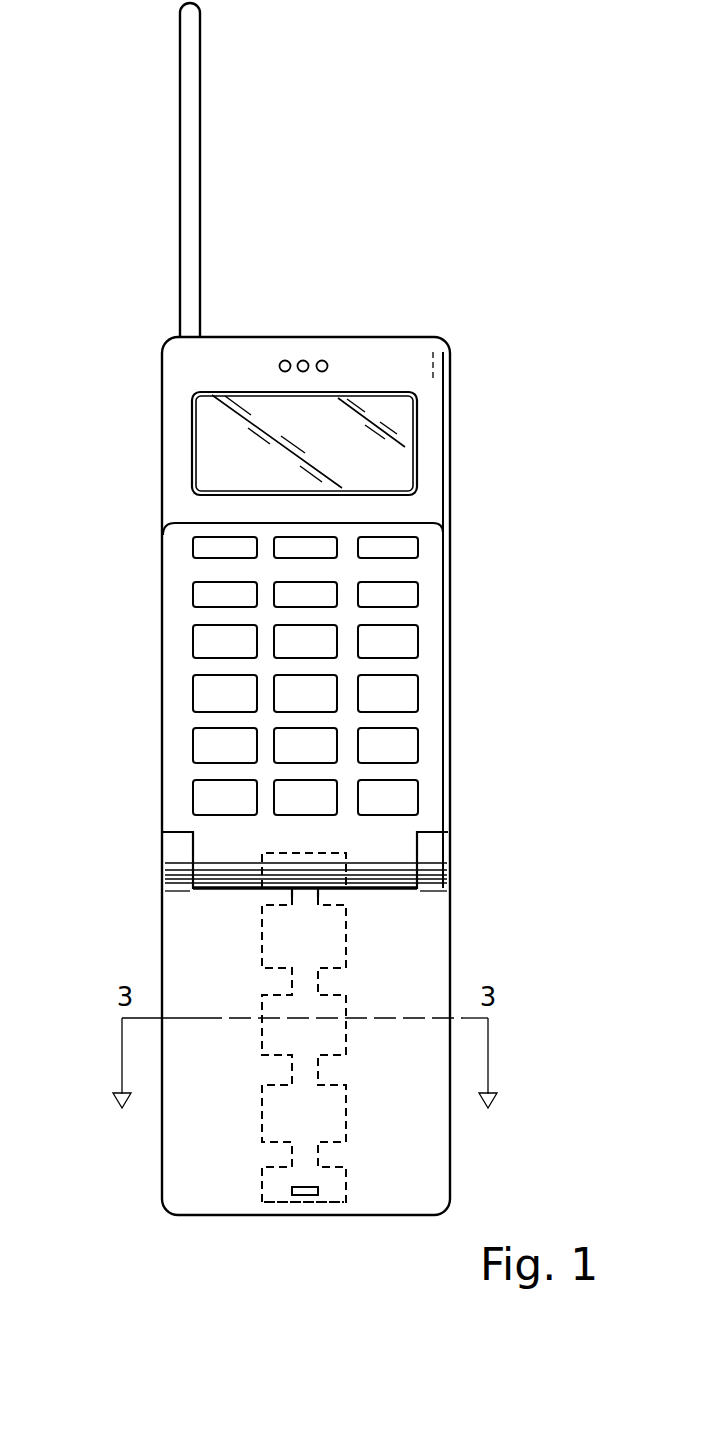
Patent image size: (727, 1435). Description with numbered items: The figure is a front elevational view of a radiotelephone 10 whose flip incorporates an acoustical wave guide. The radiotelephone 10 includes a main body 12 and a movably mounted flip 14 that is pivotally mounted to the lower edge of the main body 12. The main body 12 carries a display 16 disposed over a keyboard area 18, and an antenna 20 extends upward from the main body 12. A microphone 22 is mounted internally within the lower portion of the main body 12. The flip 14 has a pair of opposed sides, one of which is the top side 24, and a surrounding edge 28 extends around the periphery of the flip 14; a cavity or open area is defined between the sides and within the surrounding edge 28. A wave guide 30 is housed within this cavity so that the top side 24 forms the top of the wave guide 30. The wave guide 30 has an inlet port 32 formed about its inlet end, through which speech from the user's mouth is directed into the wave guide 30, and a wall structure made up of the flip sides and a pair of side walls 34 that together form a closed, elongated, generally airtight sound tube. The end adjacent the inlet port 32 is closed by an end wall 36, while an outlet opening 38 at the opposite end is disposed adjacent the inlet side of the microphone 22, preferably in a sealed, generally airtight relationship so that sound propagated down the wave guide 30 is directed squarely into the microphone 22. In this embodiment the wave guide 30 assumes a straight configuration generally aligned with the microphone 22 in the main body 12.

The radiotelephone 10 is at (403, 200).
The main body 12 is at (483, 599).
The flip 14 is at (488, 932).
The display 16 is at (390, 460).
The keyboard area 18 is at (392, 668).
The antenna 20 is at (195, 152).
The microphone 22 is at (346, 853).
The side 24 is at (427, 1162).
The surrounding edge 28 is at (450, 1187).
The wave guide 30 is at (287, 1108).
The inlet port 32 is at (310, 1195).
The side walls 34 is at (263, 1055).
The closed end wall 36 is at (275, 1202).
The outlet opening 38 is at (310, 898).